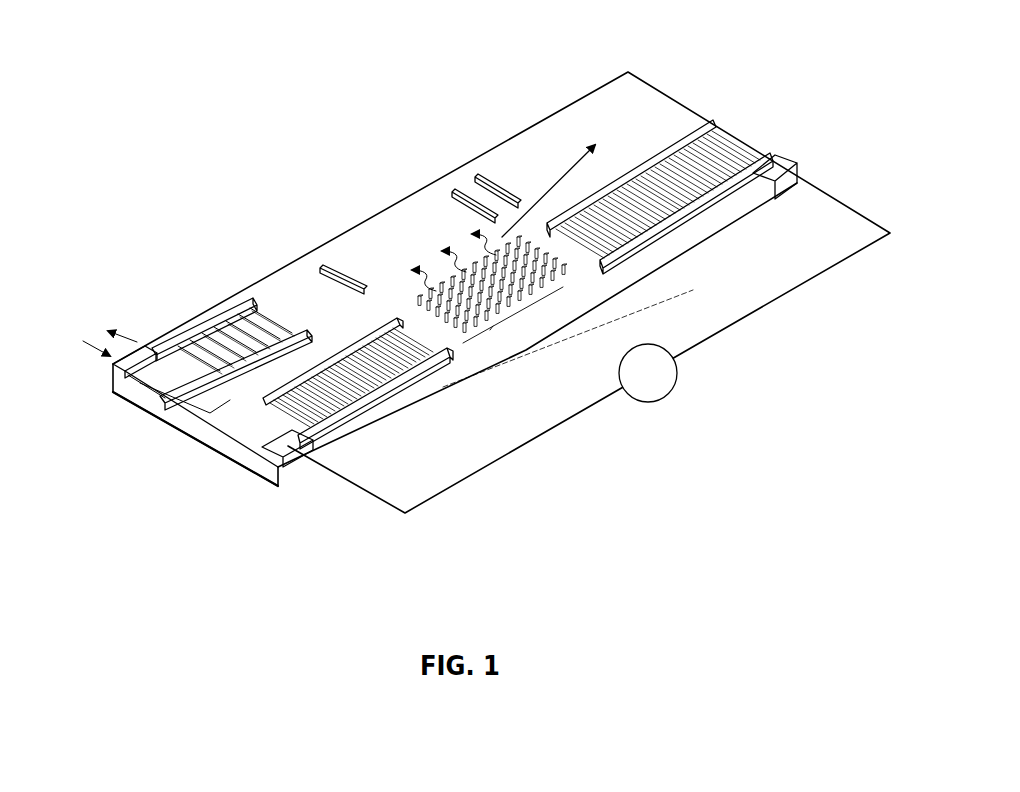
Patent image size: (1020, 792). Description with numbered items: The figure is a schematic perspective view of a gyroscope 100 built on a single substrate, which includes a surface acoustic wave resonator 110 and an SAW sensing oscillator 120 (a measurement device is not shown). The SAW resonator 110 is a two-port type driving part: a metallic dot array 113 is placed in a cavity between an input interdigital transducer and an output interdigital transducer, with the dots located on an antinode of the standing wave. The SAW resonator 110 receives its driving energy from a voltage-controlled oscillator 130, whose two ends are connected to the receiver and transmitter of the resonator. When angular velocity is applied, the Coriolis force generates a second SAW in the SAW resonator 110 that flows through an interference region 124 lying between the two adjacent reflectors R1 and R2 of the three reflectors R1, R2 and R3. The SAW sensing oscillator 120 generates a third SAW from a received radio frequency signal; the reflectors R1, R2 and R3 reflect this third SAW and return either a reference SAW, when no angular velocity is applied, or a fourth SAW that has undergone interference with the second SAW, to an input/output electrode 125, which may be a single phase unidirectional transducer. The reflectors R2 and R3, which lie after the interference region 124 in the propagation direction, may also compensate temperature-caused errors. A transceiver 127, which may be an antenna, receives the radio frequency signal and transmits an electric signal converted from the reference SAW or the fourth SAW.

The gyroscope 100 is at (764, 82).
The surface acoustic wave (SAW) resonator 110 is at (475, 327).
The metallic dot array 113 is at (510, 318).
The SAW sensing oscillator 120 is at (174, 354).
The interference region 124 is at (514, 246).
The input/output electrode 125 is at (238, 305).
The transceiver 127 is at (128, 366).
The voltage-controlled oscillator (VCO) 130 is at (670, 398).
The first reflector R1 is at (325, 266).
The second reflector R2 is at (460, 193).
The third reflector R3 is at (480, 177).